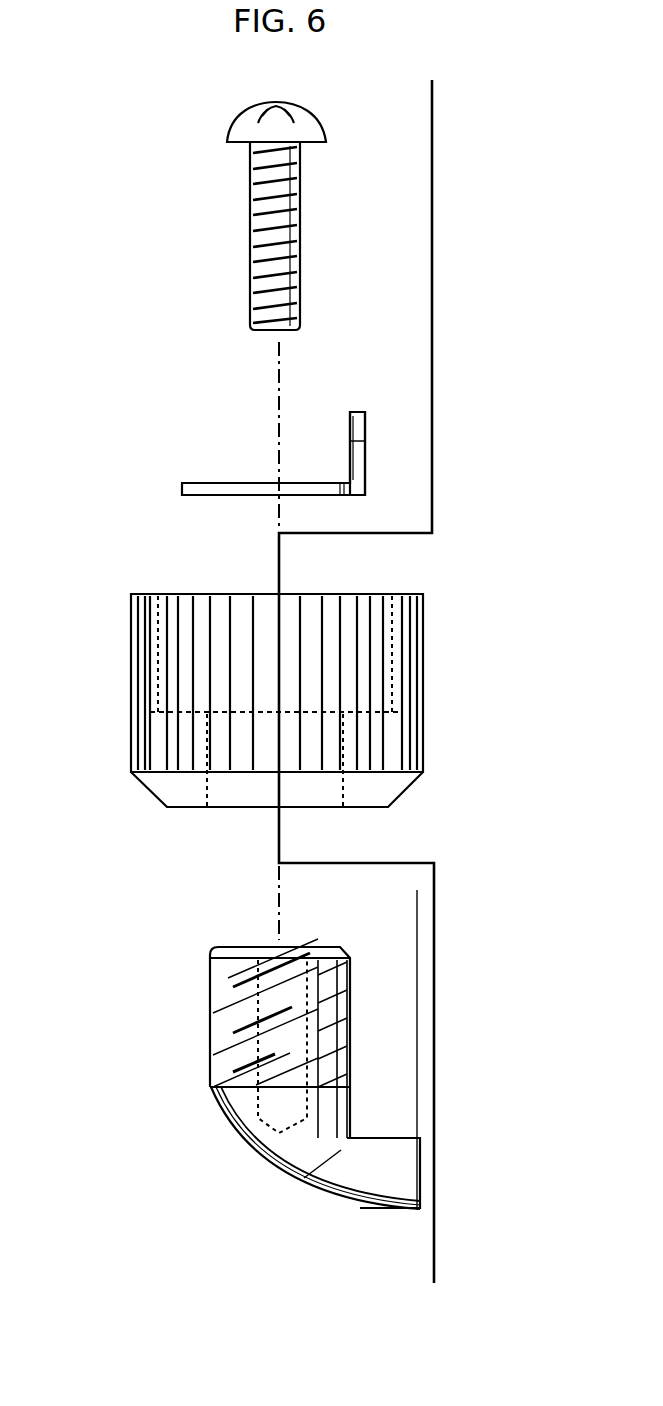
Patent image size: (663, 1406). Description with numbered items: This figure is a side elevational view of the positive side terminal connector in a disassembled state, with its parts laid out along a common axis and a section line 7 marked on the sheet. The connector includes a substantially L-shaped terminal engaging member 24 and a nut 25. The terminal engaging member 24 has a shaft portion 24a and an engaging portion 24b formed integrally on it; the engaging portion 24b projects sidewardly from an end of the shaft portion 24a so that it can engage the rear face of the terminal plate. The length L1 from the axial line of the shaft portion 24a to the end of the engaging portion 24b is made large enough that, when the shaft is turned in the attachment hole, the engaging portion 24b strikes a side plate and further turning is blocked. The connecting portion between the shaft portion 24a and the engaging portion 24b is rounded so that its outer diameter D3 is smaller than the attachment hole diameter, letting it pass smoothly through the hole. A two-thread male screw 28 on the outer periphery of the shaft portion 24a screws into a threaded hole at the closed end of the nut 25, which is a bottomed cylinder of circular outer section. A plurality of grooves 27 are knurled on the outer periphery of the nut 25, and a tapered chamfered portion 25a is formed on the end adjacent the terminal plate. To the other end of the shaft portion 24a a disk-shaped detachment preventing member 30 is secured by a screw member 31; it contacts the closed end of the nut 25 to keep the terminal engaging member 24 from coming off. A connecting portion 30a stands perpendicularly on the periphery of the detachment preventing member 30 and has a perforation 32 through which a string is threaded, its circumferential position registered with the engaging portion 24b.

The screw member 31 is at (250, 268).
The detachment preventing member 30 is at (233, 490).
The connecting portion 30a is at (363, 420).
The perforation 32 is at (350, 441).
The nut 25 is at (131, 710).
The tapered chamfered portion 25a is at (142, 790).
The grooves 27 is at (210, 612).
The two-thread male screw 28 is at (222, 1033).
The terminal engaging member 24 is at (142, 1114).
The shaft portion 24a is at (240, 1118).
The engaging portion 24b is at (372, 1206).
The length from the axial line of the shaft portion to the end of the engaging porti L1 is at (415, 918).
The outer diameter of the connecting portion between the shaft portion and the engag D3 is at (300, 1181).
The section line 7- 7 is at (473, 91).